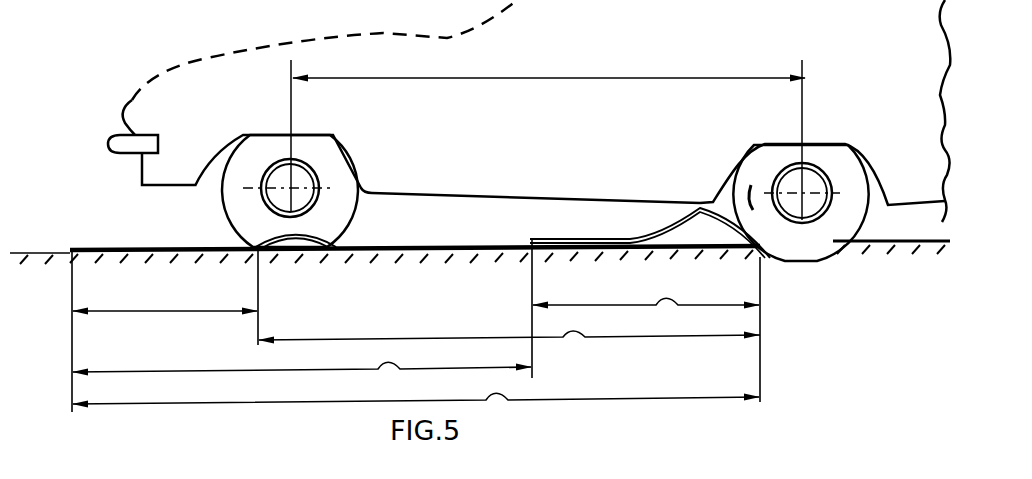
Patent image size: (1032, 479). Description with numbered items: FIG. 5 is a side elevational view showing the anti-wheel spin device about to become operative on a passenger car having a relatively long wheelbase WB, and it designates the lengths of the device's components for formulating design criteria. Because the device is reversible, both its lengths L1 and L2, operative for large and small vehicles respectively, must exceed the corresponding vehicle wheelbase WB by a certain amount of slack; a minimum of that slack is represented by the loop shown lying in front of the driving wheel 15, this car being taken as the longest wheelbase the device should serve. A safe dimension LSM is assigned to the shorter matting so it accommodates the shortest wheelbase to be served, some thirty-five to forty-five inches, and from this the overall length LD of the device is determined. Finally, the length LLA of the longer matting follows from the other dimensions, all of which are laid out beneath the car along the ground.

The driving wheel 15 is at (843, 219).
The wheelbase WB is at (549, 66).
The length L_sm LSM is at (156, 283).
The length L_LA LLA is at (609, 279).
The length L_1 L1 is at (622, 317).
The length L_2 L2 is at (439, 349).
The overall length L_0 LD is at (565, 376).